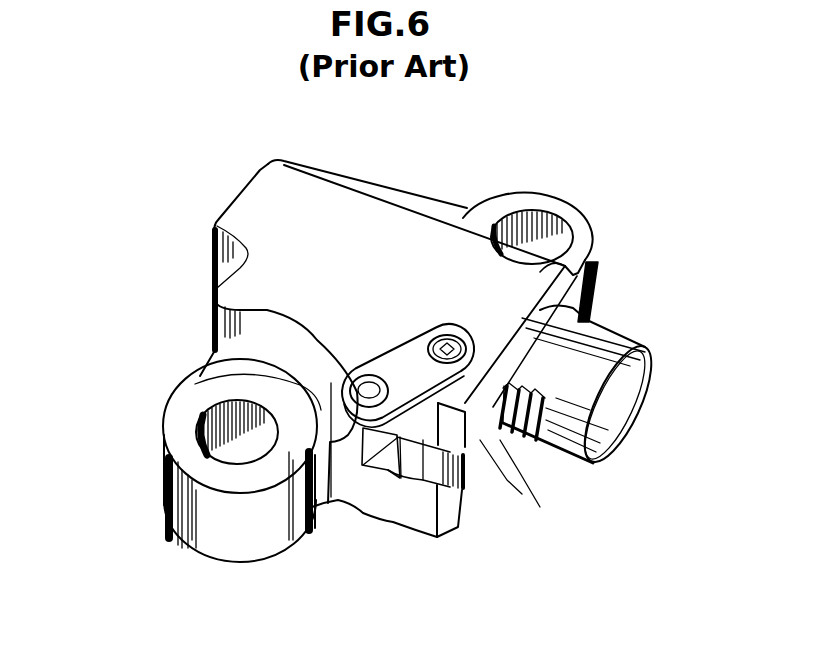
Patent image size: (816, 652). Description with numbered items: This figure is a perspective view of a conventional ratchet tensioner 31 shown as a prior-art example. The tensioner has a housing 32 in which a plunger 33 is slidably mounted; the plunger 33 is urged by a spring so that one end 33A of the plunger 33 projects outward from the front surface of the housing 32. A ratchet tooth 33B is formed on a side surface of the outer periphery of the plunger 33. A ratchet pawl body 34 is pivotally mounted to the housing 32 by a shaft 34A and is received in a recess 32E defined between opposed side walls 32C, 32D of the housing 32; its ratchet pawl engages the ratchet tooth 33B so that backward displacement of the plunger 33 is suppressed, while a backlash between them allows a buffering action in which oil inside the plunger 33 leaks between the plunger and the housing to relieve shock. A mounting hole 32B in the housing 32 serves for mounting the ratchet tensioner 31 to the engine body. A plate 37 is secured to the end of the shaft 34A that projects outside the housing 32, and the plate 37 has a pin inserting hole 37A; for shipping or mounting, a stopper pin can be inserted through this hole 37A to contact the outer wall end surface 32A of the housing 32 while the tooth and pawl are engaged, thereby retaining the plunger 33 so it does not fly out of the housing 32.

The ratchet tensioner 31 is at (441, 176).
The housing 32 is at (288, 206).
The outer wall end surface 32A is at (412, 422).
The mounting hole 32B is at (547, 236).
The side wall 32C is at (470, 430).
The side wall 32D is at (447, 527).
The recess 32E is at (372, 476).
The plunger 33 is at (584, 352).
The end of the plunger 33A is at (604, 382).
The ratchet tooth 33B is at (533, 443).
The ratchet pawl body 34 is at (495, 437).
The shaft 34A is at (447, 347).
The plate 37 is at (407, 358).
The pin inserting hole 37A is at (370, 388).